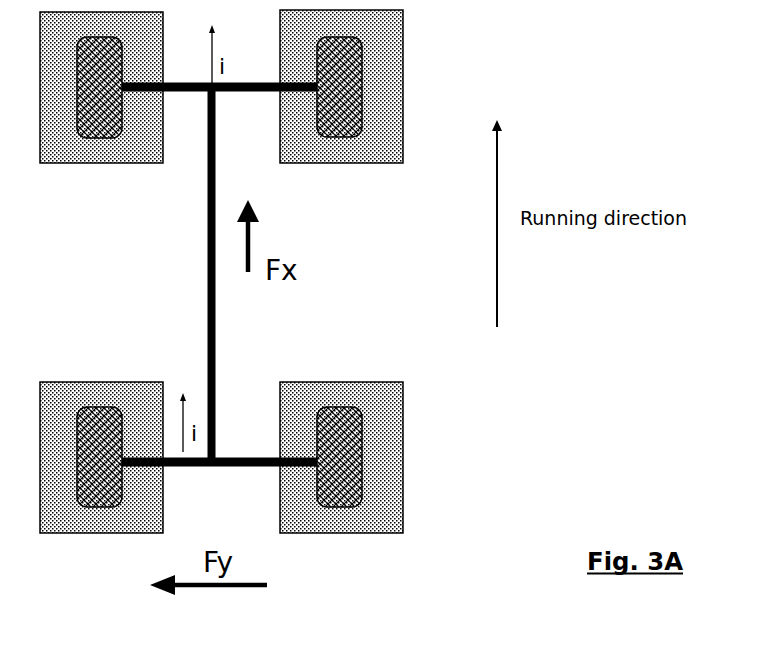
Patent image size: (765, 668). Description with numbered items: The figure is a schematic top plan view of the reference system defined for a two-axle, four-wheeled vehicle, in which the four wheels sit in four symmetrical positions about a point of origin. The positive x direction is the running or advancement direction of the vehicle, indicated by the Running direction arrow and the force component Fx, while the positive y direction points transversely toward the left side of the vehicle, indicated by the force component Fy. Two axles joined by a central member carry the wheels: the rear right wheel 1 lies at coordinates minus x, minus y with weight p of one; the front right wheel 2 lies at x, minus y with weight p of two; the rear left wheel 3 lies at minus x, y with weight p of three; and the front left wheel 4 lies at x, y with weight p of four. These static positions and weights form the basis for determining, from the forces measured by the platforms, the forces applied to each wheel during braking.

The rear right wheel 1 is at (341, 457).
The front right wheel 2 is at (341, 86).
The rear left wheel 3 is at (101, 457).
The front left wheel 4 is at (101, 87).